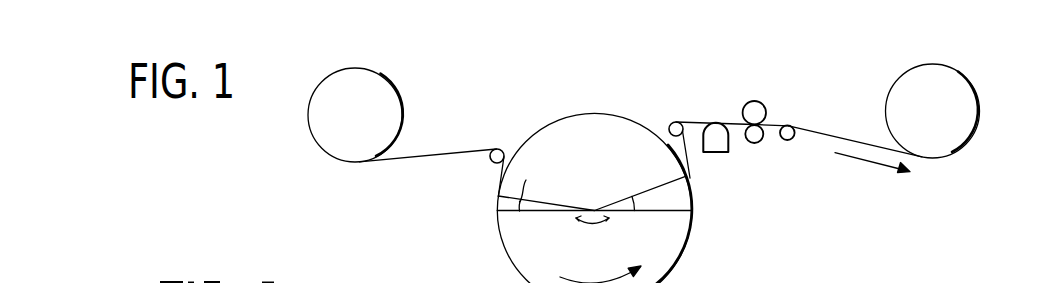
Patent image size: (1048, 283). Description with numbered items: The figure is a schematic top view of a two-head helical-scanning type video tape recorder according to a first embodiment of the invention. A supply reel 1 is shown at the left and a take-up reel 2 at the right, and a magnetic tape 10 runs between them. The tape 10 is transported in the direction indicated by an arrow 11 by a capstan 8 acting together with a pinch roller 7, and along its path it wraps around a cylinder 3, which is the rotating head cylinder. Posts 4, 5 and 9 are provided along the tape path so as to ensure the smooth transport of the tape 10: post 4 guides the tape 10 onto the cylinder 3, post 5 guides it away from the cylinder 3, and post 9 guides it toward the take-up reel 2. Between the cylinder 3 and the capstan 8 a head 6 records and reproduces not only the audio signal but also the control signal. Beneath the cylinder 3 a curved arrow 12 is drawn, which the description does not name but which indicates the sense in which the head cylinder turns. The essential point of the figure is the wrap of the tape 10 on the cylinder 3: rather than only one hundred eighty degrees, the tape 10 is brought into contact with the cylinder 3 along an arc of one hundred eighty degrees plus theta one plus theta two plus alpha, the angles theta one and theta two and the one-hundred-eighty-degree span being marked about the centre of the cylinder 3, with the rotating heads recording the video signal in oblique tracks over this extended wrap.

The supply reel 1 is at (308, 118).
The take-up reel 2 is at (980, 111).
The cylinder 3 is at (566, 127).
The post 4 is at (497, 148).
The post 5 is at (676, 122).
The head 6 is at (718, 152).
The pinch roller 7 is at (752, 101).
The capstan 8 is at (755, 143).
The post 9 is at (788, 140).
The magnetic tape 10 is at (432, 157).
The arrow 11 is at (862, 162).
The drum rotation direction 12 is at (593, 282).